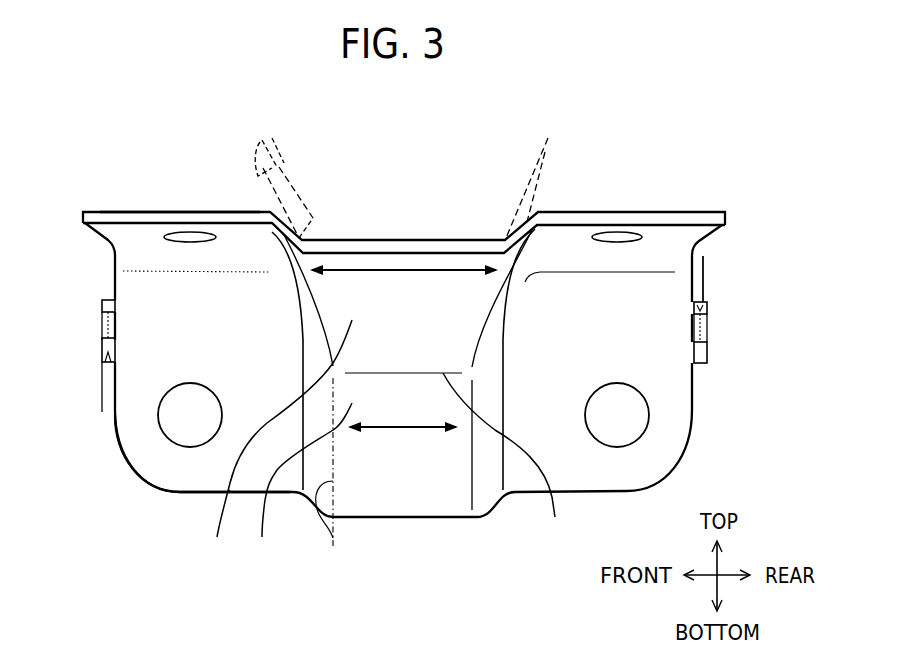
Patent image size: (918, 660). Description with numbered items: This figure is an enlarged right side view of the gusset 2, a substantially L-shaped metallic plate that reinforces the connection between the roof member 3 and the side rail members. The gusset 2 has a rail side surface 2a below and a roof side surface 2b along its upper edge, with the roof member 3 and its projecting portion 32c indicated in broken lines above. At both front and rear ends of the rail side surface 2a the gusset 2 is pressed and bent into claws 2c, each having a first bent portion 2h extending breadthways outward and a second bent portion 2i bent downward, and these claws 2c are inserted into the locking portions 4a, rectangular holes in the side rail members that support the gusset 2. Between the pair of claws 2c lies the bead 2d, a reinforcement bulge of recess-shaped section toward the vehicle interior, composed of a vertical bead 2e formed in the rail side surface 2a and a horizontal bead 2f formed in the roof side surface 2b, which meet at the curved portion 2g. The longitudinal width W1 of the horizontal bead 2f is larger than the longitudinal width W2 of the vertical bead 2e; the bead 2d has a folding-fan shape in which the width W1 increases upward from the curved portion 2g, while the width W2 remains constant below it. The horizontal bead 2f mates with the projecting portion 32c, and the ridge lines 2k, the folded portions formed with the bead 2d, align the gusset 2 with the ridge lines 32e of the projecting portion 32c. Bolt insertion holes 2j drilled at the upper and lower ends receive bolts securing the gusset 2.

The gusset 2 is at (208, 150).
The rail side surface 2a is at (140, 453).
The roof side surface 2b is at (143, 210).
The claw 2c is at (100, 328).
The bead 2d is at (275, 557).
The vertical bead 2e is at (299, 483).
The horizontal bead 2f is at (277, 441).
The curved portion 2g is at (504, 458).
The first bent portion 2h is at (98, 314).
The second bent portion 2i is at (102, 359).
The bolt insertion hole 2j is at (620, 238).
The ridge line 2k is at (330, 478).
The roof member 3 is at (549, 149).
The projecting portion 32c is at (272, 138).
The ridge line of projecting portion 32e is at (292, 191).
The locking portion 4a is at (103, 412).
The longitudinal width of horizontal bead W1 is at (404, 284).
The longitudinal width of vertical bead W2 is at (403, 441).